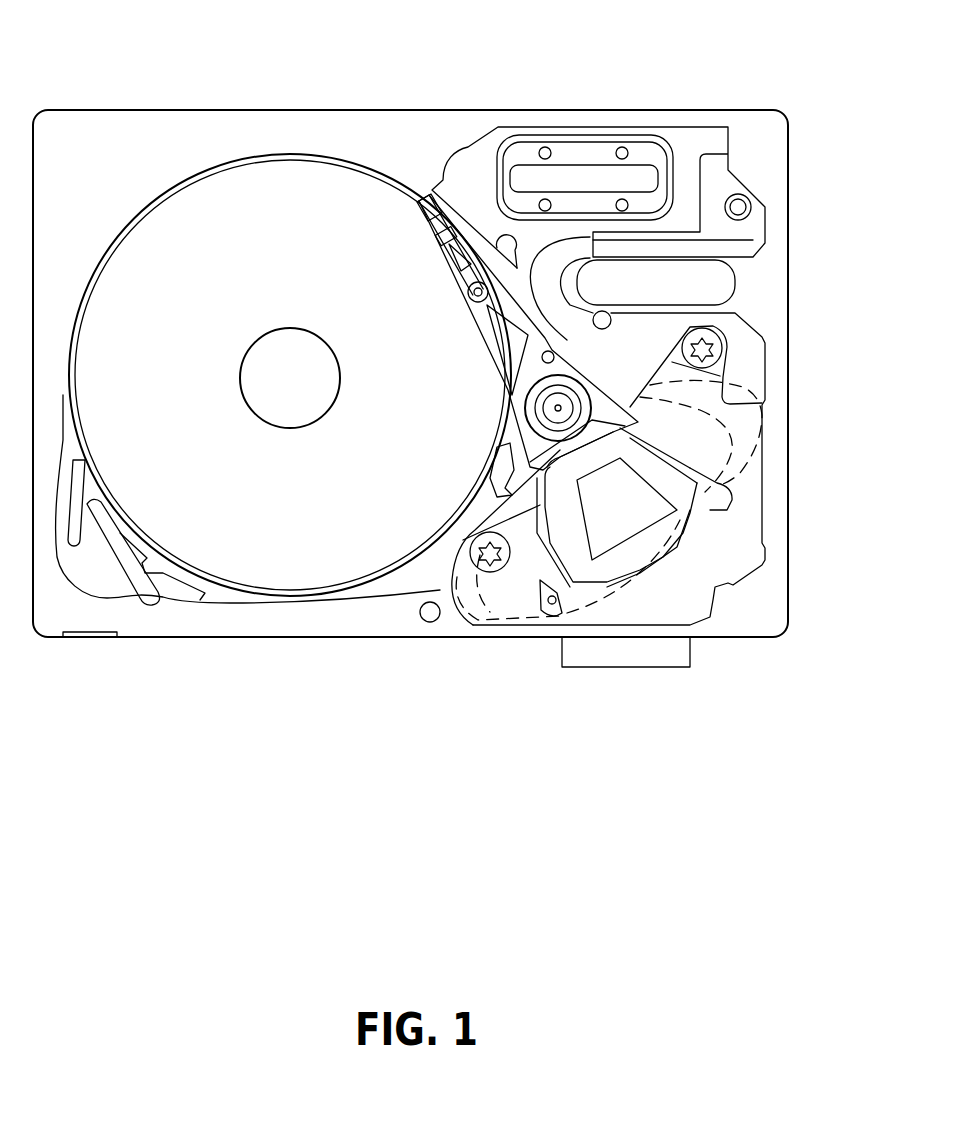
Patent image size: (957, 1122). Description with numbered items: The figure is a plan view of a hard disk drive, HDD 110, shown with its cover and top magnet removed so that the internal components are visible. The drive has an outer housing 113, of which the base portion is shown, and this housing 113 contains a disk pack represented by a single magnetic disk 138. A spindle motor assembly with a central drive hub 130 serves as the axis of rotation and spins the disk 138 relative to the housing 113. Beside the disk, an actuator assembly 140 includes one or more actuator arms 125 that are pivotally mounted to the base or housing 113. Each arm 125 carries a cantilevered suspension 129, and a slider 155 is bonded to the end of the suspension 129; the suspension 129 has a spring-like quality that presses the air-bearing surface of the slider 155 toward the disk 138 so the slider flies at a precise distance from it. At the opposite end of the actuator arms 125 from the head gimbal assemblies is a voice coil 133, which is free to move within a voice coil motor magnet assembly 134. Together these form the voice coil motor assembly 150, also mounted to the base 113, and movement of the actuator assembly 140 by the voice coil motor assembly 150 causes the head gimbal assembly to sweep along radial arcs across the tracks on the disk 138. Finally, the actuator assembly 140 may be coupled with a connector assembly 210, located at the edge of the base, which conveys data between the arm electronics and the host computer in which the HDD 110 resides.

The HDD 110 is at (160, 80).
The outer housing 113 is at (410, 327).
The magnetic disk 138 is at (290, 310).
The central drive hub 130 is at (312, 394).
The slider 155 is at (377, 209).
The cantilevered suspension 129 is at (394, 255).
The actuator arm 125 is at (503, 332).
The actuator assembly 140 is at (520, 430).
The voice coil 133 is at (575, 587).
The voice coil motor magnet assembly 134 is at (723, 405).
The voice coil motor assembly 150 is at (695, 528).
The connector assembly 210 is at (626, 695).